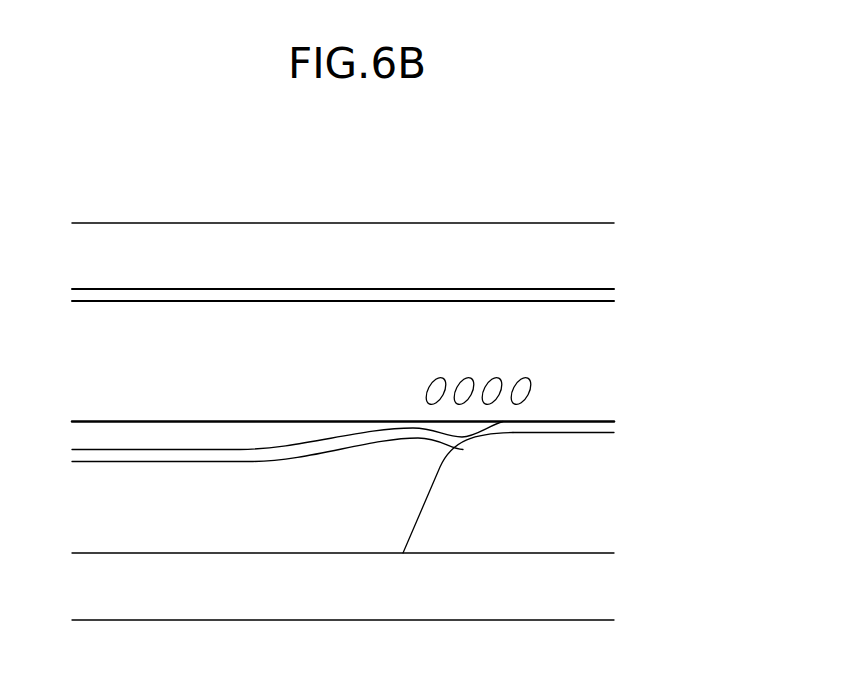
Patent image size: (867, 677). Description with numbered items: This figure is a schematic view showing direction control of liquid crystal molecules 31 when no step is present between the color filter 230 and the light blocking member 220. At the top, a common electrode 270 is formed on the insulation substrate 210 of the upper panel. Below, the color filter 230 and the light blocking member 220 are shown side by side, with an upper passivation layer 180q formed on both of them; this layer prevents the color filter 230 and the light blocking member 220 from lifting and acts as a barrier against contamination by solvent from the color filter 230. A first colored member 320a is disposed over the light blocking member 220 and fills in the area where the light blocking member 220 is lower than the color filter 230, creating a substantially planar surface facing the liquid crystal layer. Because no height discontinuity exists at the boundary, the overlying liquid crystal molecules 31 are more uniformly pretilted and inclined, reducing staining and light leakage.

The insulation substrate 210 is at (286, 240).
The common electrode 270 is at (381, 295).
The first colored member 320a is at (130, 432).
The light blocking member 220 is at (223, 490).
The color filter 230 is at (501, 528).
The upper passivation layer 180q is at (582, 430).
The liquid crystal molecules 31 is at (463, 378).